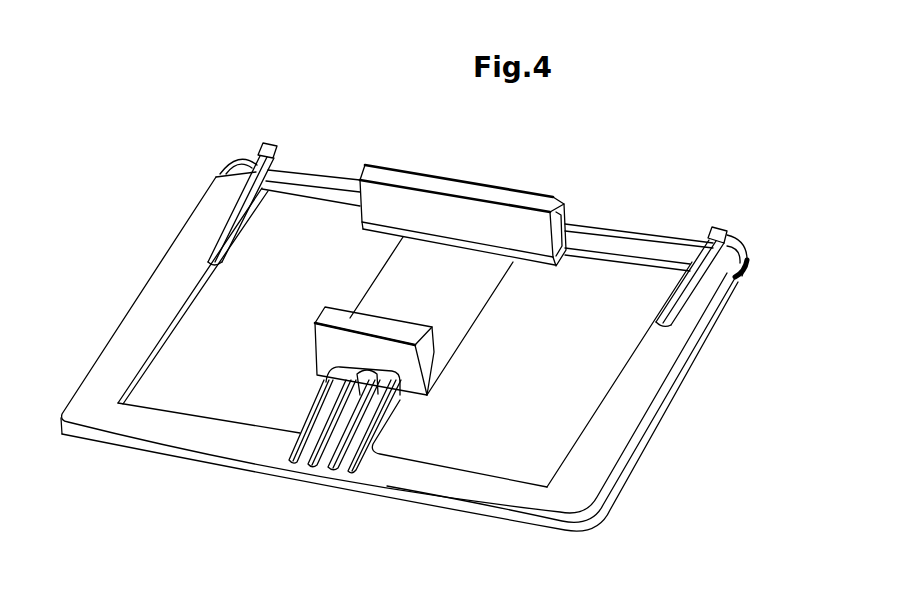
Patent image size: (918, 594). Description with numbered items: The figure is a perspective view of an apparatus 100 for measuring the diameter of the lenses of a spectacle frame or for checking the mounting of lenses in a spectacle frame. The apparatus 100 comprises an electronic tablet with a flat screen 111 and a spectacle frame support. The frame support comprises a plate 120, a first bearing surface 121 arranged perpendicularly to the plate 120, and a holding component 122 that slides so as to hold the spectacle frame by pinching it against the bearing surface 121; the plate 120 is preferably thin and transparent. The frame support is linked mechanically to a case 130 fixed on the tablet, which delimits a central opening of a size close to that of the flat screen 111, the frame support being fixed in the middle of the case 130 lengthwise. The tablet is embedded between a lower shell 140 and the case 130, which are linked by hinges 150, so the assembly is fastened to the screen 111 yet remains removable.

The apparatus 100 is at (172, 222).
The flat screen 111 is at (575, 412).
The plate 120 is at (481, 268).
The first bearing surface 121 is at (465, 217).
The holding component 122 is at (338, 307).
The case 130 is at (680, 337).
The lower shell 140 is at (752, 267).
The hinges 150 is at (280, 148).